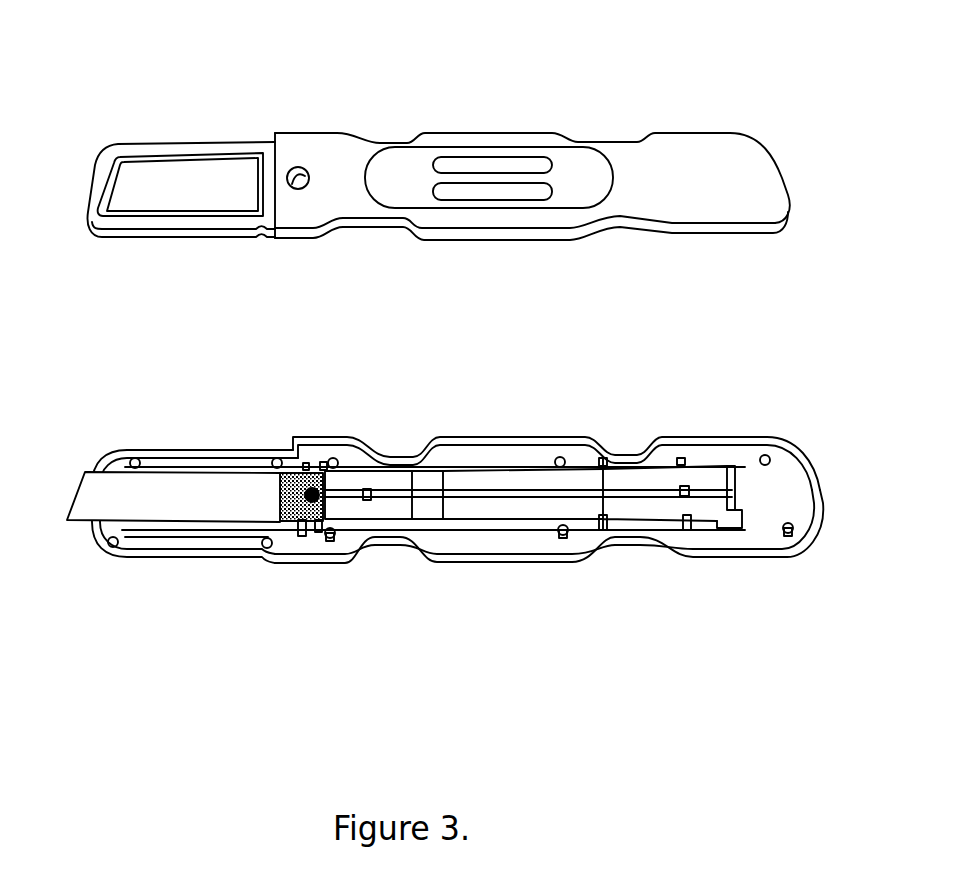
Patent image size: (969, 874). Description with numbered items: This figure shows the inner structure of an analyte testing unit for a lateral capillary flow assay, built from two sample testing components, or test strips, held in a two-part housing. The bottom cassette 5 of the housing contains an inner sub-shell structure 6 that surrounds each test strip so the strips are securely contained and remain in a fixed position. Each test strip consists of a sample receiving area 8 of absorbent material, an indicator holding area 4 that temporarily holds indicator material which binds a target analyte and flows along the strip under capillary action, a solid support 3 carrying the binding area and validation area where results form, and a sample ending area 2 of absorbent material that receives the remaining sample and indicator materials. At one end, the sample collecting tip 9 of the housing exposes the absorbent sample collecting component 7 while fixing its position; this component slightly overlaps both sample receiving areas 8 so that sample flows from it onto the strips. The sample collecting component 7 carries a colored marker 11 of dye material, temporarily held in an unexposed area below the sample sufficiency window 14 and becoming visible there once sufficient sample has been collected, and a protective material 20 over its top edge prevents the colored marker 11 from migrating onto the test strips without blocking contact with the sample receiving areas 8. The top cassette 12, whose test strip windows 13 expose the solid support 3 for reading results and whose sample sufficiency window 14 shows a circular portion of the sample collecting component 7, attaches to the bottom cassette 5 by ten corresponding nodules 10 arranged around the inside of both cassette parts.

The sample ending area 2 is at (637, 473).
The solid support 3 is at (505, 477).
The indicator holding area 4 is at (432, 475).
The bottom cassette 5 is at (773, 553).
The inner sub-shell structure 6 is at (717, 525).
The sample collecting component 7 is at (167, 485).
The sample receiving area 8 is at (375, 477).
The sample collecting tip 9 is at (183, 147).
The nodules 10 is at (766, 460).
The colored marker 11 is at (312, 475).
The top cassette 12 is at (775, 223).
The test strip windows 13 is at (485, 160).
The sample sufficiency window 14 is at (296, 168).
The protective material 20 is at (293, 442).